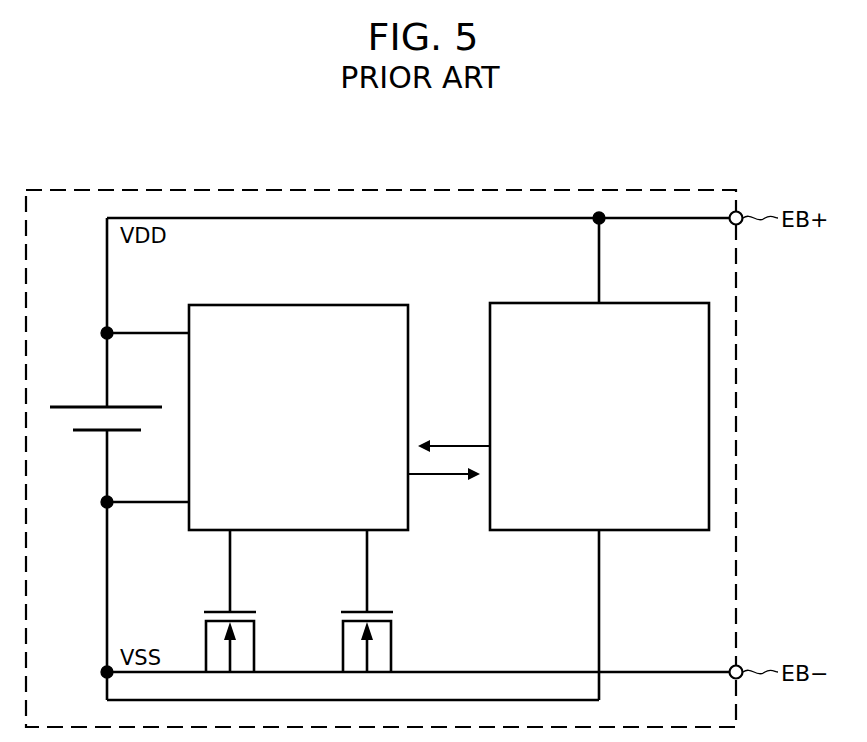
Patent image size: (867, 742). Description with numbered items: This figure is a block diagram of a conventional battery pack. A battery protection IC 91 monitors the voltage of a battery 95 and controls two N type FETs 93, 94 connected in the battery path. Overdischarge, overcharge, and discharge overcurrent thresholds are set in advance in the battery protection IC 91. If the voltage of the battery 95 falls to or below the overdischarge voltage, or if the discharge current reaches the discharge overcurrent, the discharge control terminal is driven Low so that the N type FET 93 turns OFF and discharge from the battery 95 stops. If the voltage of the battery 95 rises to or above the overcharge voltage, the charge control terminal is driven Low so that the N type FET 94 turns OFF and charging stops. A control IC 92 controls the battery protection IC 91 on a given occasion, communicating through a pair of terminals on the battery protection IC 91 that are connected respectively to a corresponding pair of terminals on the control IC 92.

The battery protection IC 91 is at (197, 305).
The control IC 92 is at (496, 303).
The N type FET 93 is at (199, 612).
The N type FET 94 is at (335, 612).
The battery 95 is at (75, 405).